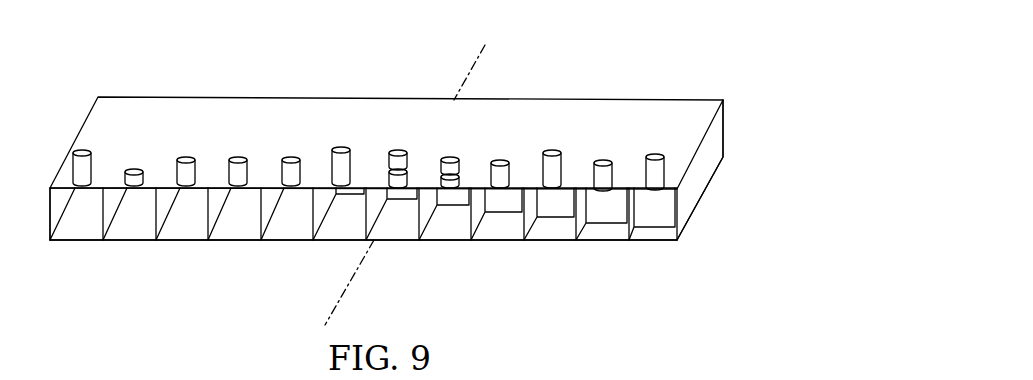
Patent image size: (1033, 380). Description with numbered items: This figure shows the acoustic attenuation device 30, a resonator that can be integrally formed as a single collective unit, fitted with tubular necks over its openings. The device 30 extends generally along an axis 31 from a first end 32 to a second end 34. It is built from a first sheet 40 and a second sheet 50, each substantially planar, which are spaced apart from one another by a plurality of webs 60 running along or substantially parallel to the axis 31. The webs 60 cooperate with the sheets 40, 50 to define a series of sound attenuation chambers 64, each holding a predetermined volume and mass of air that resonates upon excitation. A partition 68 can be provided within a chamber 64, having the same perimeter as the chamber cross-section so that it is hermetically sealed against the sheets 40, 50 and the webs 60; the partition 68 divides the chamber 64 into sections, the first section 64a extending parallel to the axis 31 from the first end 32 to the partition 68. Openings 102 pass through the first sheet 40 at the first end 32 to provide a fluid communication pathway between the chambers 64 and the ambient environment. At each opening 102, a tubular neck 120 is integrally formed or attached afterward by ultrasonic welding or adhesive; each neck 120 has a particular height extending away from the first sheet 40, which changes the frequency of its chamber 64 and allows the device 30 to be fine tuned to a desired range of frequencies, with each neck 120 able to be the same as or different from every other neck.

The acoustic attenuation device 30 is at (98, 78).
The axis 31 is at (463, 76).
The first end 32 is at (100, 255).
The second end 34 is at (685, 90).
The first sheet 40 is at (138, 163).
The second sheet 50 is at (290, 227).
The web 60 is at (477, 220).
The sound attenuation chamber 64 is at (447, 215).
The first chamber section 64a is at (243, 212).
The partition 68 is at (655, 217).
The opening 102 is at (605, 191).
The tubular neck 120 is at (552, 185).